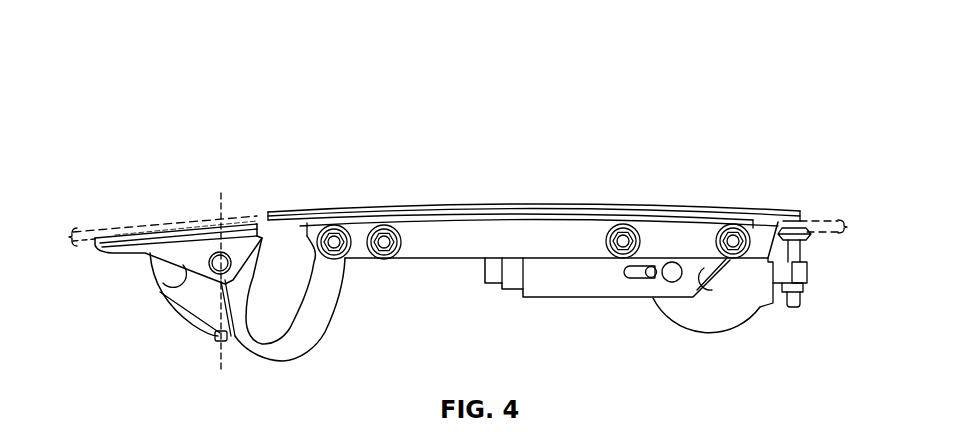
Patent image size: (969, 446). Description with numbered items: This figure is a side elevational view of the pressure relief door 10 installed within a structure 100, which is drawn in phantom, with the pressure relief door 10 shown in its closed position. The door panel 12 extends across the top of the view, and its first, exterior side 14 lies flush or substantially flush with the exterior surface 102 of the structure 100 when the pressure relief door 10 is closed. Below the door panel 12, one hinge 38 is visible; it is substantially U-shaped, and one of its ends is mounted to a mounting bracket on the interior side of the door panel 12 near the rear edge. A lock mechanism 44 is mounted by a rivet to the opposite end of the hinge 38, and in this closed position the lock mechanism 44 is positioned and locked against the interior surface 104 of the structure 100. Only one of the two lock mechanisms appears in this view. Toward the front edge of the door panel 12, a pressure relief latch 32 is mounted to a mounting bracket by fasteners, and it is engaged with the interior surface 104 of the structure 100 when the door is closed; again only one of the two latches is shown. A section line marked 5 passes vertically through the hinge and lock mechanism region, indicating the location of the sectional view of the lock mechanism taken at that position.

The pressure relief door 10 is at (186, 72).
The door panel 12 is at (432, 210).
The first, exterior side 14 is at (510, 205).
The pressure relief latch 32 is at (701, 334).
The hinge 38 is at (336, 318).
The lock mechanism 44 is at (150, 250).
The structure 100 is at (104, 222).
The exterior surface 102 is at (837, 220).
The interior surface 104 is at (92, 246).
The section line 5- 5 is at (180, 370).